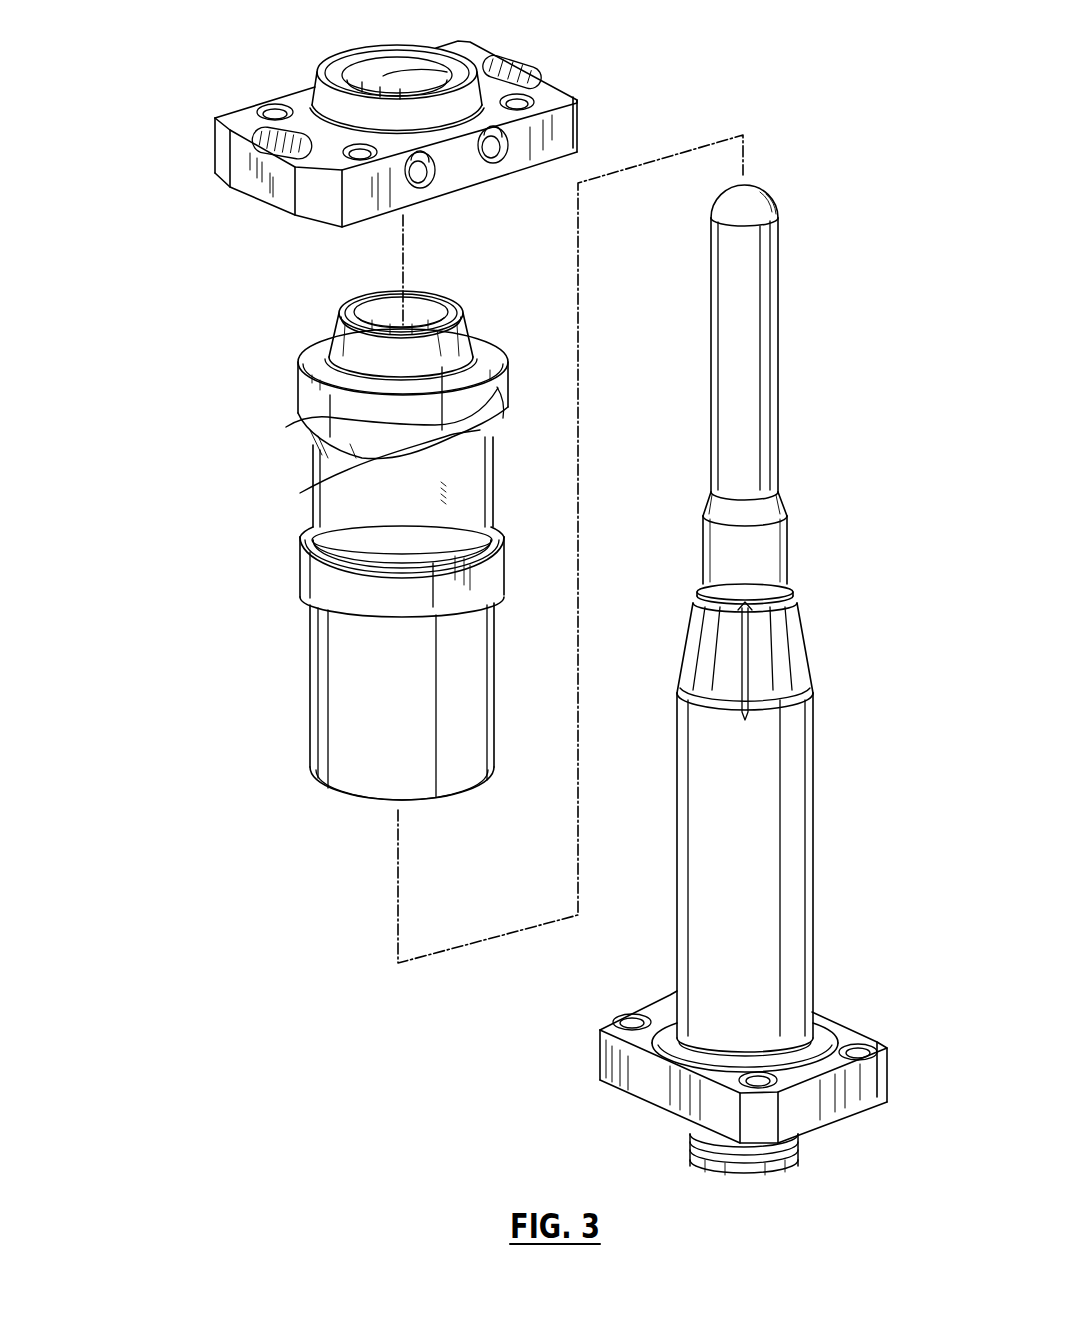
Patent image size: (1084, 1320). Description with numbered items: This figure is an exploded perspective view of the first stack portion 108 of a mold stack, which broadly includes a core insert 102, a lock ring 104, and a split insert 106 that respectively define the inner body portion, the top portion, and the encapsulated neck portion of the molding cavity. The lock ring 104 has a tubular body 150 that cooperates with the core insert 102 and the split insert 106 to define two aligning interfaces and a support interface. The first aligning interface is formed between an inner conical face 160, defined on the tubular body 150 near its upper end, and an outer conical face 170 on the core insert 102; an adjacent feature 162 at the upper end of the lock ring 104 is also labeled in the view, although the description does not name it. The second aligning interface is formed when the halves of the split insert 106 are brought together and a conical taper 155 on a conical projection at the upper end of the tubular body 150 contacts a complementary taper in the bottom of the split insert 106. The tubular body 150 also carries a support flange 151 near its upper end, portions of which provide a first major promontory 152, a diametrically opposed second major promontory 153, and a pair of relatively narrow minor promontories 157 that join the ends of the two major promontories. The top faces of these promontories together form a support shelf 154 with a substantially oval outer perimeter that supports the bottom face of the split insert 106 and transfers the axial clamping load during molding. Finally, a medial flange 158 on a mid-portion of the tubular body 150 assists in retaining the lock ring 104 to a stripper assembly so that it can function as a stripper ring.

The core insert 102 is at (763, 680).
The lock ring 104 is at (337, 504).
The split insert 106 is at (604, 99).
The first stack portion 108 is at (343, 1055).
The tubular body 150 is at (322, 643).
The support flange 151 is at (200, 393).
The first major promontory 152 is at (299, 398).
The second major promontory 153 is at (286, 428).
The support shelf 154 is at (487, 343).
The conical taper 155 is at (357, 347).
The minor promontories 157 is at (300, 493).
The medial flange 158 is at (328, 578).
The inner conical face 160 is at (417, 296).
The seal ring 162 is at (448, 299).
The outer conical face 170 is at (794, 640).